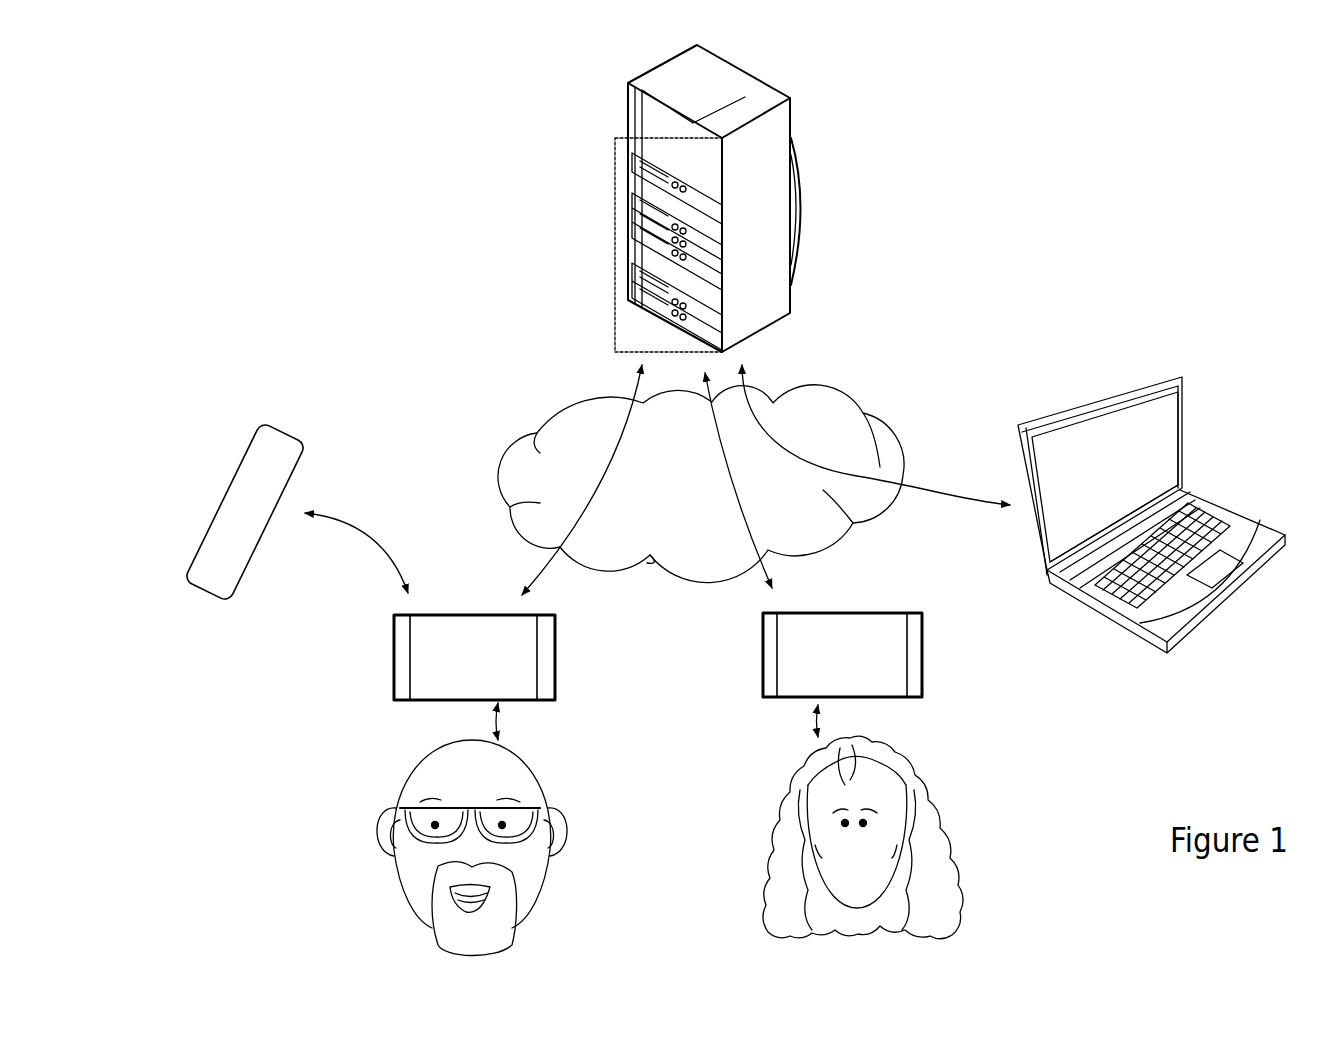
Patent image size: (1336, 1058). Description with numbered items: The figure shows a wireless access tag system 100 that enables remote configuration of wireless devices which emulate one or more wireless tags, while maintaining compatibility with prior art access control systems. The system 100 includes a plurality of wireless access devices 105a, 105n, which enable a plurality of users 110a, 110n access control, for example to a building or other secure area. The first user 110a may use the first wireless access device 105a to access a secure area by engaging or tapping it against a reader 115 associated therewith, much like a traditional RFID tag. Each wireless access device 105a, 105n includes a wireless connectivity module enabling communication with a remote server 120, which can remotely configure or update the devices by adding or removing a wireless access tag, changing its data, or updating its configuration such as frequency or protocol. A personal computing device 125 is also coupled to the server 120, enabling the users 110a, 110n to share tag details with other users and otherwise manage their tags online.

The wireless access tag system 100 is at (1142, 162).
The first wireless access device 105a is at (388, 665).
The wireless access device 105n is at (934, 647).
The first user 110a is at (574, 809).
The user 110n is at (974, 840).
The reader 115 is at (326, 445).
The remote server 120 is at (826, 186).
The personal computing device 125 is at (1200, 434).